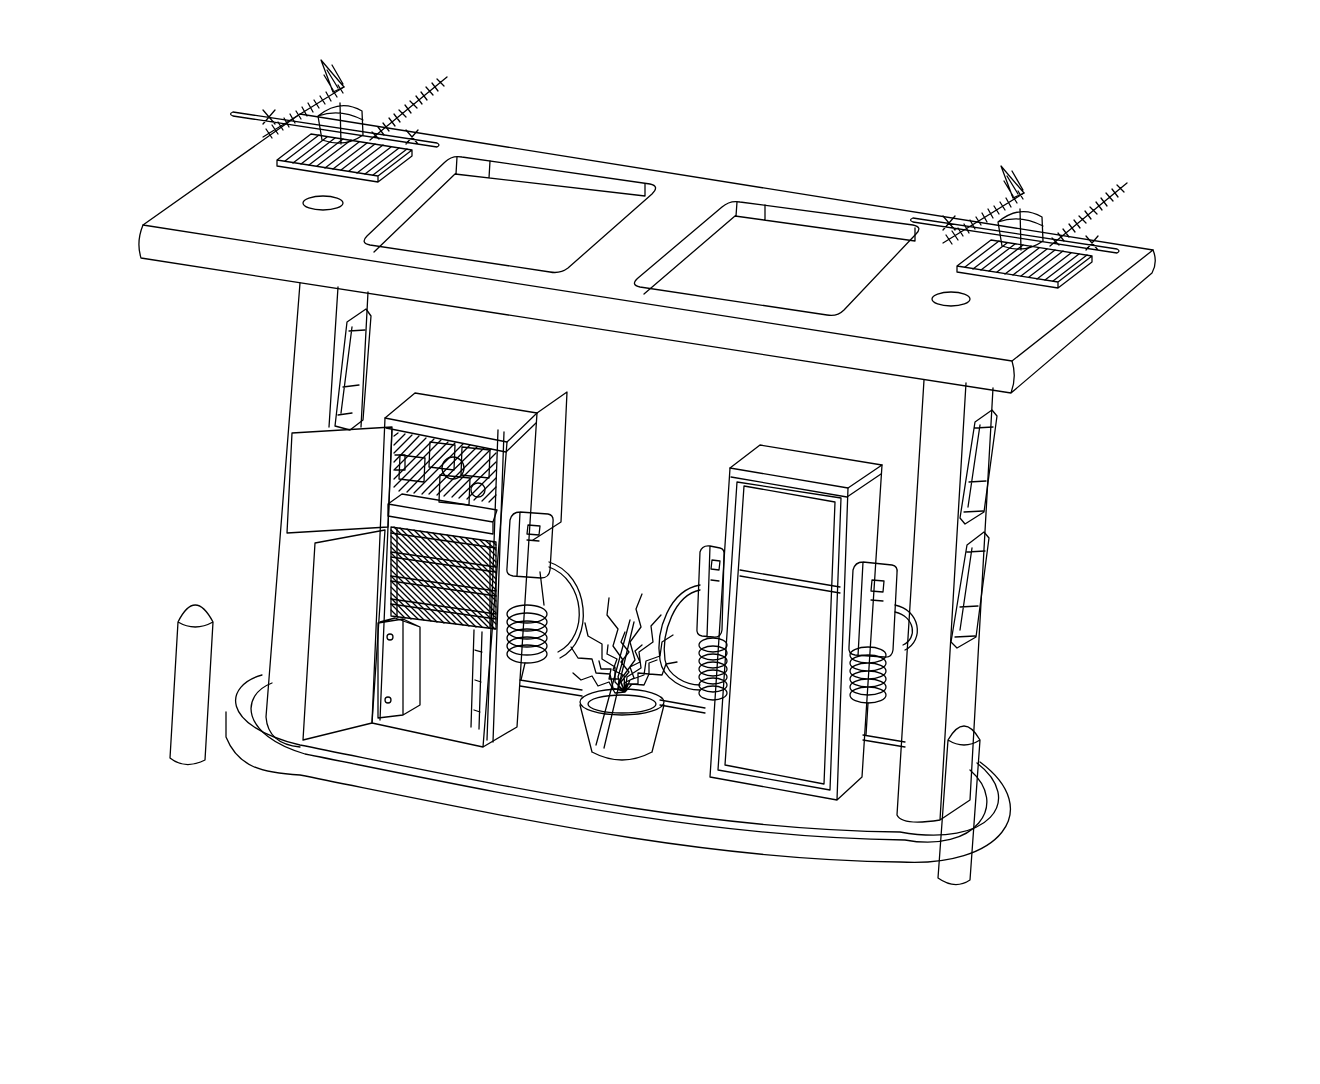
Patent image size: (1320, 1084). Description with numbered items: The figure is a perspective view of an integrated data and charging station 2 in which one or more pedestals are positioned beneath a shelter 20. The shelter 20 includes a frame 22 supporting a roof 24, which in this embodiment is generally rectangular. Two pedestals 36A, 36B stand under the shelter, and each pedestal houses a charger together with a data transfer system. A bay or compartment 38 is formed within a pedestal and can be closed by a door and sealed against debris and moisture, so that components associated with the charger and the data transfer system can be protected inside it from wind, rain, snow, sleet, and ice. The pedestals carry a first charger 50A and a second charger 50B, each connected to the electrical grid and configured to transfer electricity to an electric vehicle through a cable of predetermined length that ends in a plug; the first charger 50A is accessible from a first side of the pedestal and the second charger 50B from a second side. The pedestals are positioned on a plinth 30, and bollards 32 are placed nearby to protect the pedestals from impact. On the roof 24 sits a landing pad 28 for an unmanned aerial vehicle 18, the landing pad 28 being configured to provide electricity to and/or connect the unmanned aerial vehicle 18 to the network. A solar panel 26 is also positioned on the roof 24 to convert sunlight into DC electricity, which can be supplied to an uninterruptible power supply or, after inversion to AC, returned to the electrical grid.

The integrated data and charging station 2 is at (703, 507).
The unmanned aerial vehicle 18 is at (1019, 201).
The shelter 20 is at (650, 226).
The frame 22 is at (657, 552).
The roof 24 is at (648, 237).
The solar panel 26 is at (641, 234).
The landing pad 28 is at (1059, 289).
The plinth 30 is at (618, 802).
The bollard 32 is at (595, 748).
The pedestal 36A is at (454, 537).
The pedestal 36B is at (773, 591).
The compartment 38 is at (497, 497).
The first charger 50A is at (678, 629).
The second charger 50B is at (565, 601).